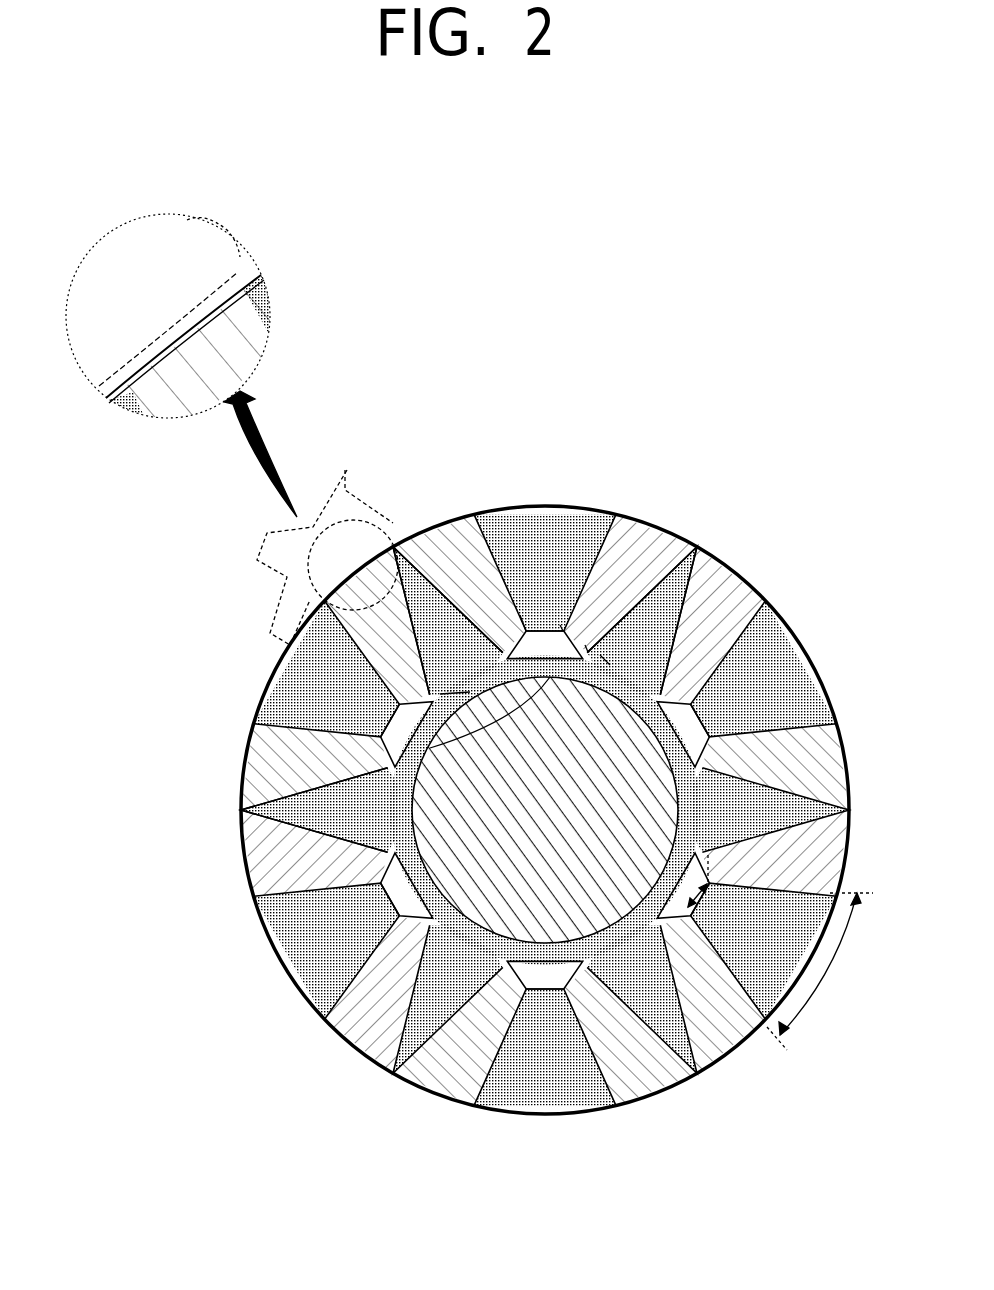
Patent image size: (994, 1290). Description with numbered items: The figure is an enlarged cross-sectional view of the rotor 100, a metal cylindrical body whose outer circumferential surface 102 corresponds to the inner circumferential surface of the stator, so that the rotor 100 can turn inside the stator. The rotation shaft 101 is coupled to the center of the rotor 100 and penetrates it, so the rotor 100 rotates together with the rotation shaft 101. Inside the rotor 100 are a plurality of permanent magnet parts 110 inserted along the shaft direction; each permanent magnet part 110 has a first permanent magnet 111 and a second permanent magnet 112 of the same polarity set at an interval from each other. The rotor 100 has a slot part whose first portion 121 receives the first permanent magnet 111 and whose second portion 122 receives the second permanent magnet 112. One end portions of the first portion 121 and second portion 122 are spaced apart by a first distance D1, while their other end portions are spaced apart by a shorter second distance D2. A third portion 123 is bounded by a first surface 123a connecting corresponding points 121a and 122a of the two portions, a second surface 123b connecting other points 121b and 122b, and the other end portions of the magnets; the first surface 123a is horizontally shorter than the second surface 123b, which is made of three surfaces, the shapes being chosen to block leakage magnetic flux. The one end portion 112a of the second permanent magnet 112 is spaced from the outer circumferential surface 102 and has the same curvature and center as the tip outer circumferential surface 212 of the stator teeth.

The rotor 100 is at (511, 156).
The rotation shaft 101 is at (547, 810).
The outer circumferential surface 102 is at (545, 1114).
The permanent magnet part 110 is at (620, 463).
The first permanent magnet 111 is at (468, 528).
The second permanent magnet 112 is at (623, 528).
The one end portion of the second permanent magnet 112a is at (252, 292).
The first portion 121 is at (418, 535).
The point of the first portion 121a is at (560, 625).
The other point of the first portion 121b is at (520, 615).
The second portion 122 is at (680, 532).
The point of the second portion 122a is at (585, 645).
The other point of the second portion 122b is at (600, 655).
The third portion 123 is at (168, 770).
The first surface 123a is at (470, 692).
The second surface 123b is at (430, 748).
The tip outer circumferential surface of the teeth 212 is at (245, 262).
The first distance D1 is at (820, 971).
The second distance D2 is at (708, 905).